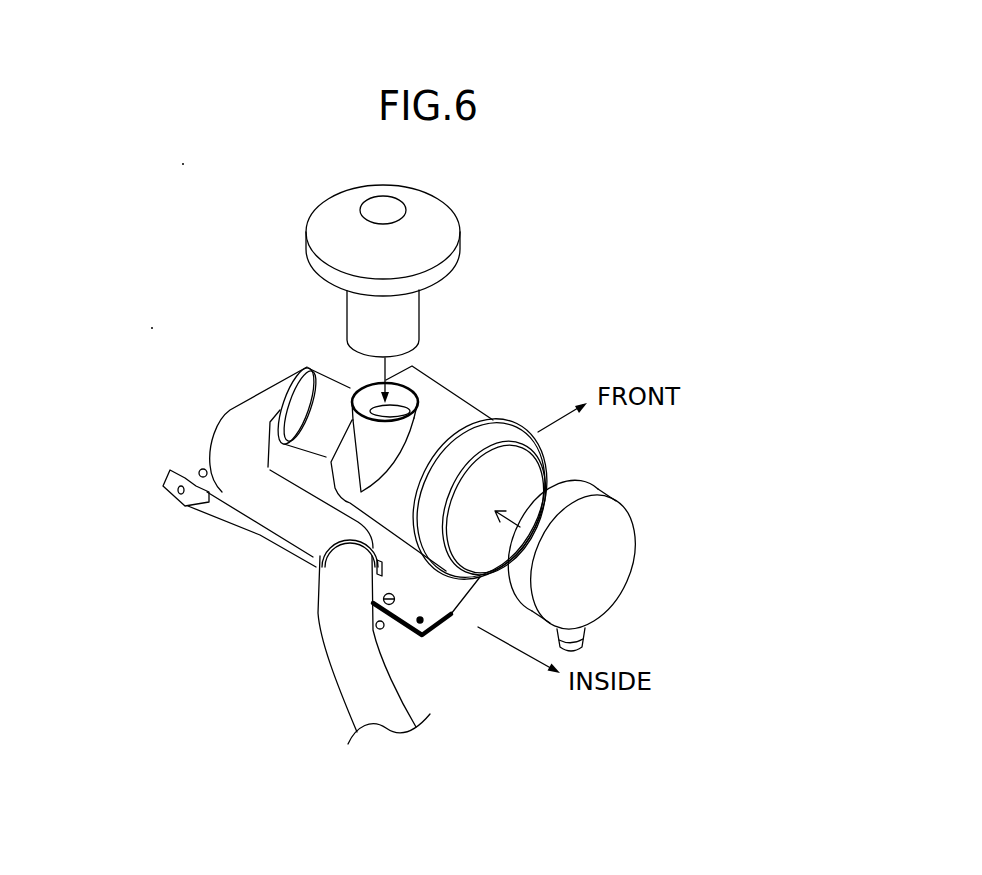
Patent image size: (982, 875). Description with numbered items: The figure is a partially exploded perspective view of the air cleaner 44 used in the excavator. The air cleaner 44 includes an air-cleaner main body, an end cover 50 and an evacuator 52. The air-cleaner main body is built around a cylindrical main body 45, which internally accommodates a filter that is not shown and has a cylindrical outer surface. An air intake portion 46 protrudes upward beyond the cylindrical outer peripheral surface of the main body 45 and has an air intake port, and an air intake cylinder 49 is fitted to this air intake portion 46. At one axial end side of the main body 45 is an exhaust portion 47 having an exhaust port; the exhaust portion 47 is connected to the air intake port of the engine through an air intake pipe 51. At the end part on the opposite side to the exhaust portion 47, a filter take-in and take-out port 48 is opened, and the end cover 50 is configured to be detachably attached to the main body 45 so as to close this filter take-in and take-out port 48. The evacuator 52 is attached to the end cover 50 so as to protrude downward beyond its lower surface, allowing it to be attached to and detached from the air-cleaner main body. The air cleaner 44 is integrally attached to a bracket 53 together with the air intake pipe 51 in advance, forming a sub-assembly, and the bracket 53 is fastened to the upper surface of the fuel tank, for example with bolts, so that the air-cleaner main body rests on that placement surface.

The air cleaner 44 is at (455, 383).
The main body 45 is at (467, 413).
The air intake portion 46 is at (402, 390).
The exhaust portion 47 is at (352, 392).
The filter take-in and take-out port 48 is at (540, 477).
The air intake cylinder 49 is at (462, 247).
The end cover 50 is at (637, 515).
The air intake pipe 51 is at (225, 417).
The evacuator 52 is at (586, 633).
The bracket 53 is at (453, 608).